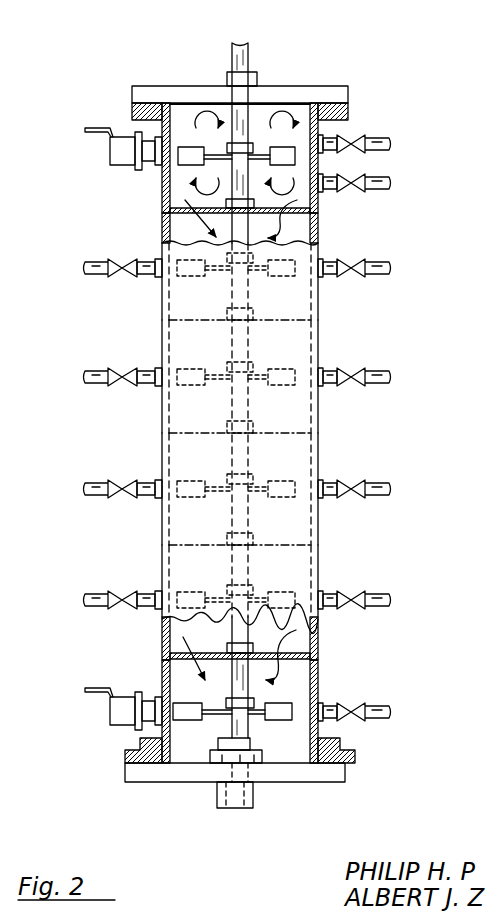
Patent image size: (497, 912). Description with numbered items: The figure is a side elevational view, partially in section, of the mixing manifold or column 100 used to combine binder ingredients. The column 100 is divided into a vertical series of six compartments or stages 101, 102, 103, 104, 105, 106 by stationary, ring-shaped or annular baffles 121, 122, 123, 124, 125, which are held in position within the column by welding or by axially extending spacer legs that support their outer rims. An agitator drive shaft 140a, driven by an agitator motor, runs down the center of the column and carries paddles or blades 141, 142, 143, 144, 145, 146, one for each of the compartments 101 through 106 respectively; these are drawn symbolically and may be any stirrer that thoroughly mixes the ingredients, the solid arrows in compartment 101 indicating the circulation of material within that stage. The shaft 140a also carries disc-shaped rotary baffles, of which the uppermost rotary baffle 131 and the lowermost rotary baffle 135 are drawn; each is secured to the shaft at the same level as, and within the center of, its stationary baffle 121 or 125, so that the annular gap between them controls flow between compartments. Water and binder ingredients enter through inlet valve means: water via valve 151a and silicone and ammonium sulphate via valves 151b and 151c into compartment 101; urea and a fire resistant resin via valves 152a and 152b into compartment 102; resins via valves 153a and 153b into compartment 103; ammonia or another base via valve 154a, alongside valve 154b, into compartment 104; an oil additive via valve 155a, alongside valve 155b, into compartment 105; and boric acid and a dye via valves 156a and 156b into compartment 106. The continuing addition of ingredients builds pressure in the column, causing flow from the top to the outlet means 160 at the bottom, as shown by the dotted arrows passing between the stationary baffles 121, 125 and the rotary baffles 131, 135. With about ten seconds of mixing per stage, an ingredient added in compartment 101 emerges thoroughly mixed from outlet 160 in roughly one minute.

The mixing manifold or column 100 is at (325, 75).
The agitator drive shaft 140a is at (266, 27).
The compartment 101 is at (190, 185).
The compartment 102 is at (178, 223).
The compartment 103 is at (188, 345).
The compartment 104 is at (178, 445).
The compartment 105 is at (185, 565).
The compartment 106 is at (195, 738).
The stationary baffle 121 is at (316, 210).
The stationary baffle 122 is at (305, 308).
The stationary baffle 123 is at (305, 413).
The stationary baffle 124 is at (305, 525).
The stationary baffle 125 is at (290, 655).
The rotary baffle 131 is at (300, 242).
The rotary baffle 135 is at (305, 625).
The paddle or blade 141 is at (180, 162).
The paddle or blade 142 is at (175, 283).
The paddle or blade 143 is at (165, 400).
The paddle or blade 144 is at (170, 515).
The paddle or blade 145 is at (187, 574).
The paddle or blade 146 is at (180, 700).
The inlet valve means 151a is at (110, 147).
The inlet valve means 151b is at (362, 135).
The inlet valve means 151c is at (362, 177).
The inlet valve 152a is at (116, 258).
The inlet valve 152b is at (364, 265).
The inlet valve 153a is at (120, 370).
The inlet valve 153b is at (358, 368).
The inlet valve 154a is at (122, 480).
The inlet valve 154b is at (360, 480).
The inlet valve 155a is at (118, 592).
The inlet valve 155b is at (358, 590).
The inlet valve means 156a is at (110, 712).
The inlet valve means 156b is at (358, 705).
The outlet means 160 is at (217, 803).